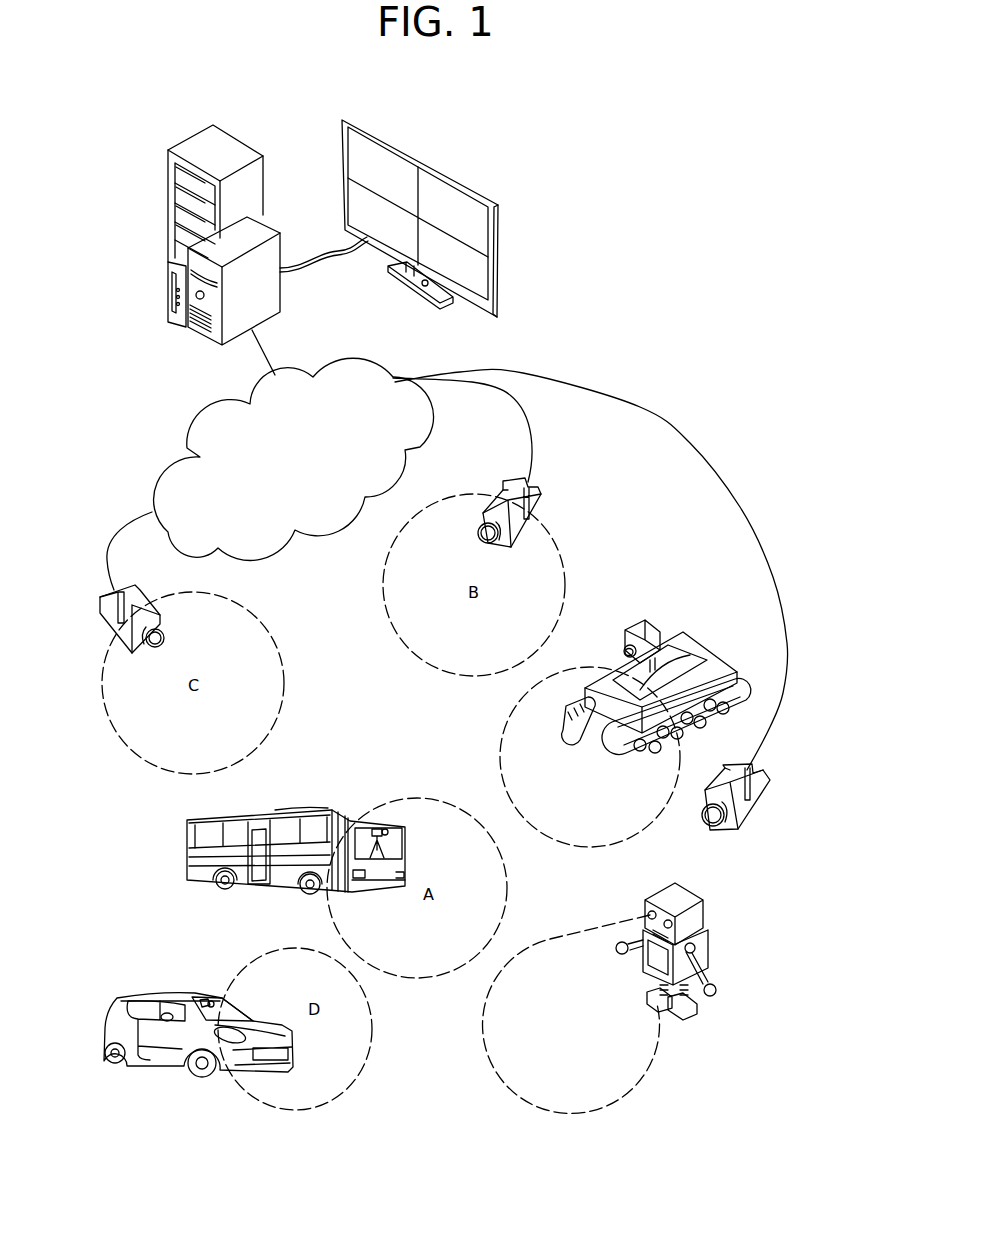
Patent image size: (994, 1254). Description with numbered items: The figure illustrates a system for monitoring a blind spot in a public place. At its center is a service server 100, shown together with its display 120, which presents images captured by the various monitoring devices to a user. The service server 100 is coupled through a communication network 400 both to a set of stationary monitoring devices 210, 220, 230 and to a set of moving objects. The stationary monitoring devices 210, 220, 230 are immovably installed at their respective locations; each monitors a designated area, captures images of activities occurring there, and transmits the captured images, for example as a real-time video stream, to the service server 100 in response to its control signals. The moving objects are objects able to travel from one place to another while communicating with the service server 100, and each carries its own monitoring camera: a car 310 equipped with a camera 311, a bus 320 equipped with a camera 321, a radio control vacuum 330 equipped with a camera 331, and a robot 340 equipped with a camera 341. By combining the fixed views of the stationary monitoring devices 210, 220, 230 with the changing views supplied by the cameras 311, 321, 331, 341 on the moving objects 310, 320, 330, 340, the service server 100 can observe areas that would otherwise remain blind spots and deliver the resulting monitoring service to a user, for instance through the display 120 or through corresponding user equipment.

The service server 100 is at (273, 226).
The display 120 is at (460, 178).
The communication network 400 is at (360, 360).
The stationary monitoring device 210 is at (543, 500).
The stationary monitoring device 220 is at (763, 783).
The stationary monitoring device 230 is at (103, 618).
The car 310 is at (198, 1021).
The camera 311 is at (205, 998).
The bus 320 is at (296, 833).
The camera 321 is at (377, 815).
The radio control vacuum 330 is at (656, 676).
The camera 331 is at (655, 620).
The robot 340 is at (688, 944).
The camera 341 is at (680, 920).